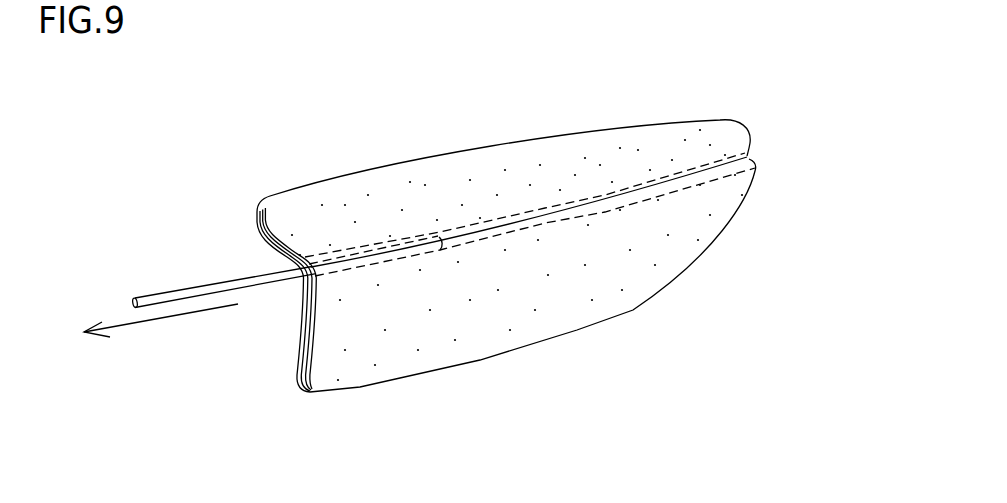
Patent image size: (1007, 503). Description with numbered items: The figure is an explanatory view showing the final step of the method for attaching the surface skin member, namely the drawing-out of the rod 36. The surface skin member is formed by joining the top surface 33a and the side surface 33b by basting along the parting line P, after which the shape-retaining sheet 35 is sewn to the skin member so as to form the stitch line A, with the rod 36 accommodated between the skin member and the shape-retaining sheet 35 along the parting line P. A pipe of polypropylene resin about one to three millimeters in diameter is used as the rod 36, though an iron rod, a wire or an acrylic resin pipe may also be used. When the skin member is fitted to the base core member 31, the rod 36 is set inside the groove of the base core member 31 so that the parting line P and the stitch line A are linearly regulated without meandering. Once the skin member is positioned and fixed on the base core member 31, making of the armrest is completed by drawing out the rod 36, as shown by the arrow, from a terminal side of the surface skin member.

The top surface 33a is at (406, 192).
The side surface 33b is at (482, 312).
The shape-retaining sheet 35 is at (302, 287).
The base core member 31 is at (306, 321).
The parting line P is at (495, 224).
The stitch line A is at (568, 205).
The rod 36 is at (194, 287).